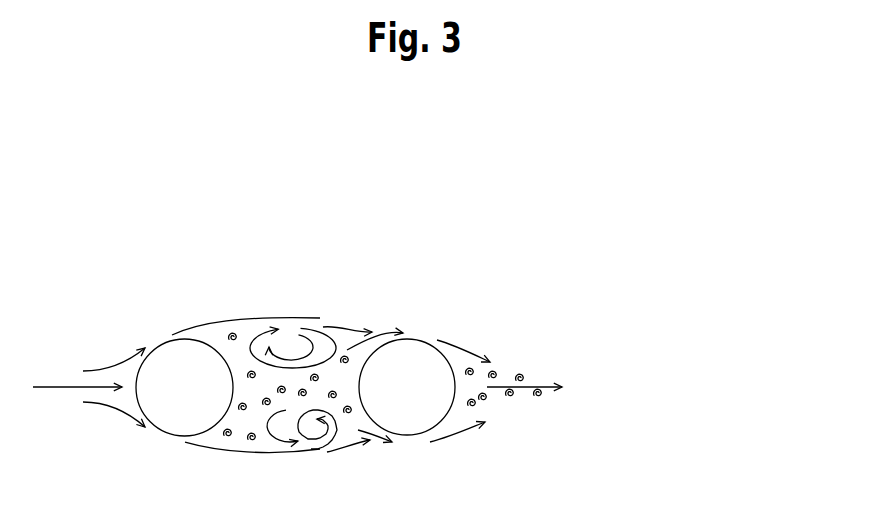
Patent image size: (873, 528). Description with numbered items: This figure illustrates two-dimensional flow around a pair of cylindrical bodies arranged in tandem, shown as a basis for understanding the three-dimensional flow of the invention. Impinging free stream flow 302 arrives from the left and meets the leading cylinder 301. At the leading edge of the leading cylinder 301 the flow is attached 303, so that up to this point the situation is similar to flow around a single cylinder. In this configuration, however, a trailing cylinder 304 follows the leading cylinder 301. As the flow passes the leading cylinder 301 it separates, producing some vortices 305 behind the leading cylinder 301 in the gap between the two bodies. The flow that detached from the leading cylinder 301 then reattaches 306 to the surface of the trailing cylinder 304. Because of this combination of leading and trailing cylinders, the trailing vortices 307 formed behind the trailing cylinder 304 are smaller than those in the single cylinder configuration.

The leading cylinder 301 is at (187, 388).
The impinging free stream flow 302 is at (33, 387).
The attached flow 303 is at (108, 368).
The trailing cylinder 304 is at (410, 388).
The vortices 305 is at (283, 348).
The reattached flow 306 is at (376, 333).
The trailing vortices 307 is at (498, 377).